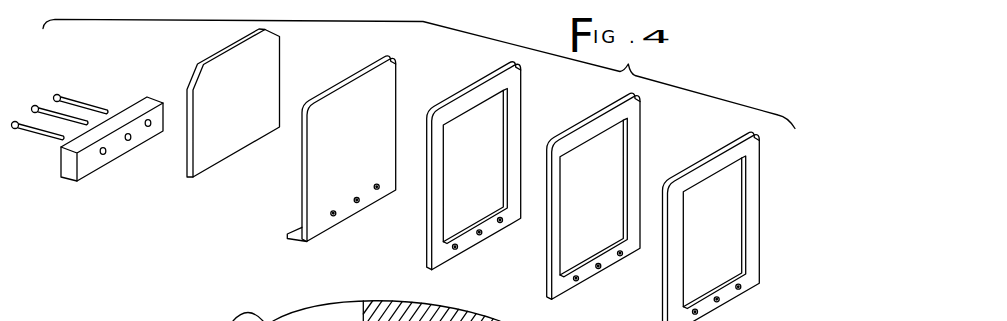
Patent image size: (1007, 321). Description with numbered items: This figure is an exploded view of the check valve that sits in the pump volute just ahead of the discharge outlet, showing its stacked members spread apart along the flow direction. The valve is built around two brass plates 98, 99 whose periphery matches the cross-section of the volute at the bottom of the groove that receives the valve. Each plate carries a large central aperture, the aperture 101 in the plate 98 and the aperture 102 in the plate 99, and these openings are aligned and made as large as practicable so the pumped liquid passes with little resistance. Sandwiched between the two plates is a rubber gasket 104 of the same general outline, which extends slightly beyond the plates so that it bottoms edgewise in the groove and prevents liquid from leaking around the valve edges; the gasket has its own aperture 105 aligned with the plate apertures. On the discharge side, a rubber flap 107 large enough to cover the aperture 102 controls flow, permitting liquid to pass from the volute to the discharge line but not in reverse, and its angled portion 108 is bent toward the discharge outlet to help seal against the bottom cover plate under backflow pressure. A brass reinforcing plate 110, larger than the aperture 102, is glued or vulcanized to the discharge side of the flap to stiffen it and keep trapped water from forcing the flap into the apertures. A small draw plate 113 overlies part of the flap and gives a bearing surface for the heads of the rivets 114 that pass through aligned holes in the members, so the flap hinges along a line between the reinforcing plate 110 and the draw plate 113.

The brass plate 98 is at (731, 224).
The brass plate 99 is at (495, 166).
The central aperture 101 is at (733, 212).
The central aperture 102 is at (495, 133).
The rubber gasket 104 is at (618, 196).
The aperture 105 is at (612, 162).
The rubber flap 107 is at (363, 159).
The angled portion 108 is at (281, 252).
The brass reinforcing plate 110 is at (270, 52).
The small plate 113 is at (88, 170).
The rivets 114 is at (78, 102).